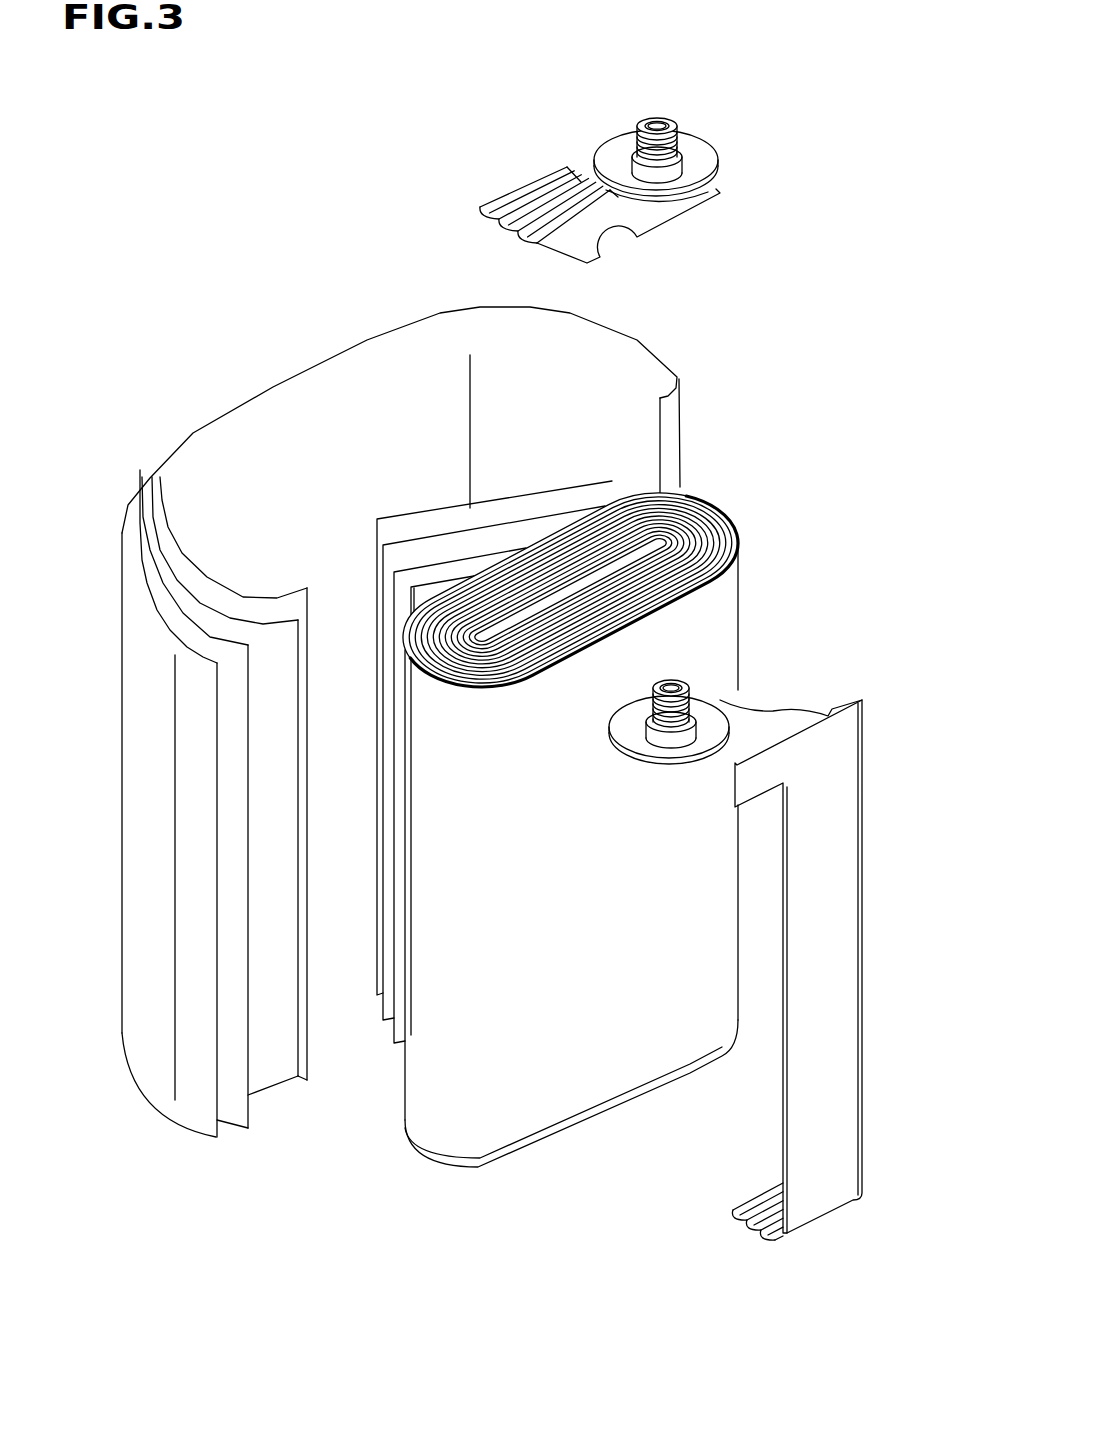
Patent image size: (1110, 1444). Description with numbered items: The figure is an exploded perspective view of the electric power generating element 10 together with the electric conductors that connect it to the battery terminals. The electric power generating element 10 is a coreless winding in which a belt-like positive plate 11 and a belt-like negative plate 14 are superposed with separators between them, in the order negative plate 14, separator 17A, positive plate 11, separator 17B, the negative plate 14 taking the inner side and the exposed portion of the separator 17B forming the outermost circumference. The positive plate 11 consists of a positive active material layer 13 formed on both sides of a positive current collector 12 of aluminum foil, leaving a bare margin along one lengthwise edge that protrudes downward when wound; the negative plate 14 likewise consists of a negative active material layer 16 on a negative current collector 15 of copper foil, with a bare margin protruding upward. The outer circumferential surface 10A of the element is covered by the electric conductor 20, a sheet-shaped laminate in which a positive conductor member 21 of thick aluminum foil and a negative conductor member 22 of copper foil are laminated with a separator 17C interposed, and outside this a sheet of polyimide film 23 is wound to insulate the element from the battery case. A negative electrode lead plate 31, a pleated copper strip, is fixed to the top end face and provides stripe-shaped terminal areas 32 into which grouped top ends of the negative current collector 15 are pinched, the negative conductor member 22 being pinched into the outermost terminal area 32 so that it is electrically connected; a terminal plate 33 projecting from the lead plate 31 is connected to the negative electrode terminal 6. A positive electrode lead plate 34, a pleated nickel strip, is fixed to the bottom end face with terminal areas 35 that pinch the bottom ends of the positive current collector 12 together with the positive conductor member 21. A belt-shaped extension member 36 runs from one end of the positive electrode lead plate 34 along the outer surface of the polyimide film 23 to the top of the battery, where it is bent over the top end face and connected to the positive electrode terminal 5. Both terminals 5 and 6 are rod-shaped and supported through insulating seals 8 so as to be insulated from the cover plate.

The positive electrode terminal 5 is at (742, 664).
The negative electrode terminal 6 is at (663, 123).
The insulating seal 8 is at (688, 650).
The electric power generating element 10 is at (628, 886).
The outer circumferential surface 10A is at (563, 1144).
The positive plate 11 is at (335, 1126).
The positive current collector 12 is at (368, 1113).
The positive active material layer 13 is at (335, 1103).
The negative plate 14 is at (626, 713).
The negative current collector 15 is at (607, 716).
The negative active material layer 16 is at (615, 746).
The separator 17A is at (577, 686).
The separator 17B is at (574, 648).
The separator 17C is at (225, 687).
The electric conductor 20 is at (217, 669).
The positive conductor member 21 is at (193, 704).
The negative conductor member 22 is at (233, 680).
The polyimide film 23 is at (380, 722).
The negative electrode lead plate 31 is at (622, 197).
The terminal area 32 is at (512, 186).
The terminal plate 33 is at (685, 232).
The positive electrode lead plate 34 is at (776, 953).
The terminal area 35 is at (725, 1240).
The extension member 36 is at (791, 663).